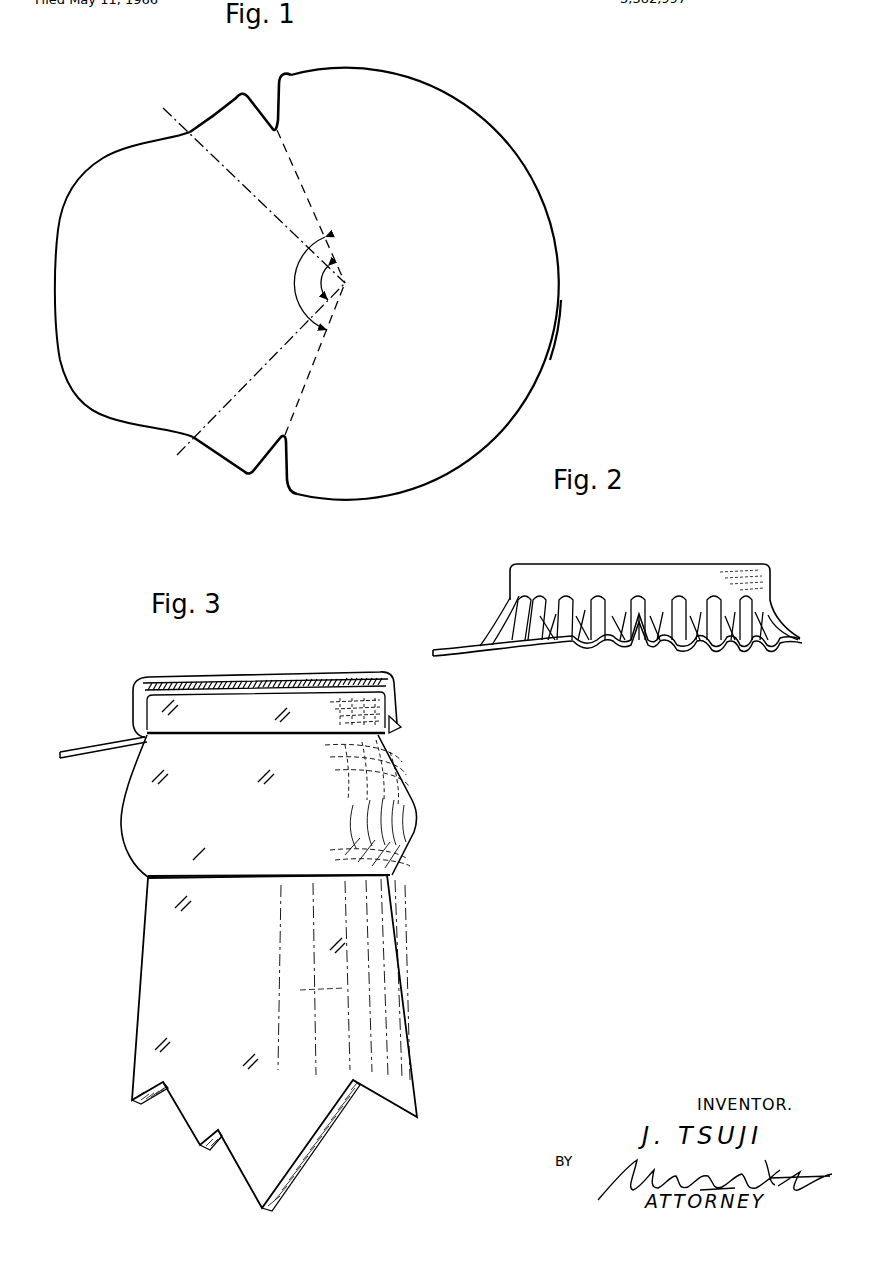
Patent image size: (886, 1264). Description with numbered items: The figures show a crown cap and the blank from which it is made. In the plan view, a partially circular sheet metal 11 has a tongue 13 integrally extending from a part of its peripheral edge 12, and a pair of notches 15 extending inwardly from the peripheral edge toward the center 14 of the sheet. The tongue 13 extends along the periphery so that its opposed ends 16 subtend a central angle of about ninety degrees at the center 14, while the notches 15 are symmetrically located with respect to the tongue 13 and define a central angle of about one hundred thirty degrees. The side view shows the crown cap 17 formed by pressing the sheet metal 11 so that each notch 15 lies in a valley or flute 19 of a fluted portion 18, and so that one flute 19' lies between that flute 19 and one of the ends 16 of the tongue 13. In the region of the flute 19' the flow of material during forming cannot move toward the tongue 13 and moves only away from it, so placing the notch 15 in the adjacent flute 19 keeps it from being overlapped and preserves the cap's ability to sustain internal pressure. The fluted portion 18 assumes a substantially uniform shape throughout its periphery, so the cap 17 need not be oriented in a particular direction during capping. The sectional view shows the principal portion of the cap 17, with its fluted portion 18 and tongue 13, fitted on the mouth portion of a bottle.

In FIG. 1, the sheet metal 11 is at (418, 118).
In FIG. 1, the peripheral edge 12 is at (556, 338).
In FIG. 1, the tongue 13 is at (115, 348).
In FIG. 2, the tongue 13 is at (466, 650).
In FIG. 3, the tongue 13 is at (86, 754).
In FIG. 1, the center 14 is at (345, 283).
In FIG. 1, the notches 15 is at (276, 128).
In FIG. 2, the notches 15 is at (640, 616).
In FIG. 1, the opposed ends of the tongue 16 is at (190, 132).
In FIG. 2, the opposed ends of the tongue 16 is at (573, 640).
In FIG. 2, the crown cap 17 is at (614, 562).
In FIG. 3, the crown cap 17 is at (257, 676).
In FIG. 2, the fluted portion 18 is at (773, 614).
In FIG. 3, the fluted portion 18 is at (398, 722).
In FIG. 2, the flute 19 is at (675, 556).
In FIG. 2, the flute 19' is at (577, 555).